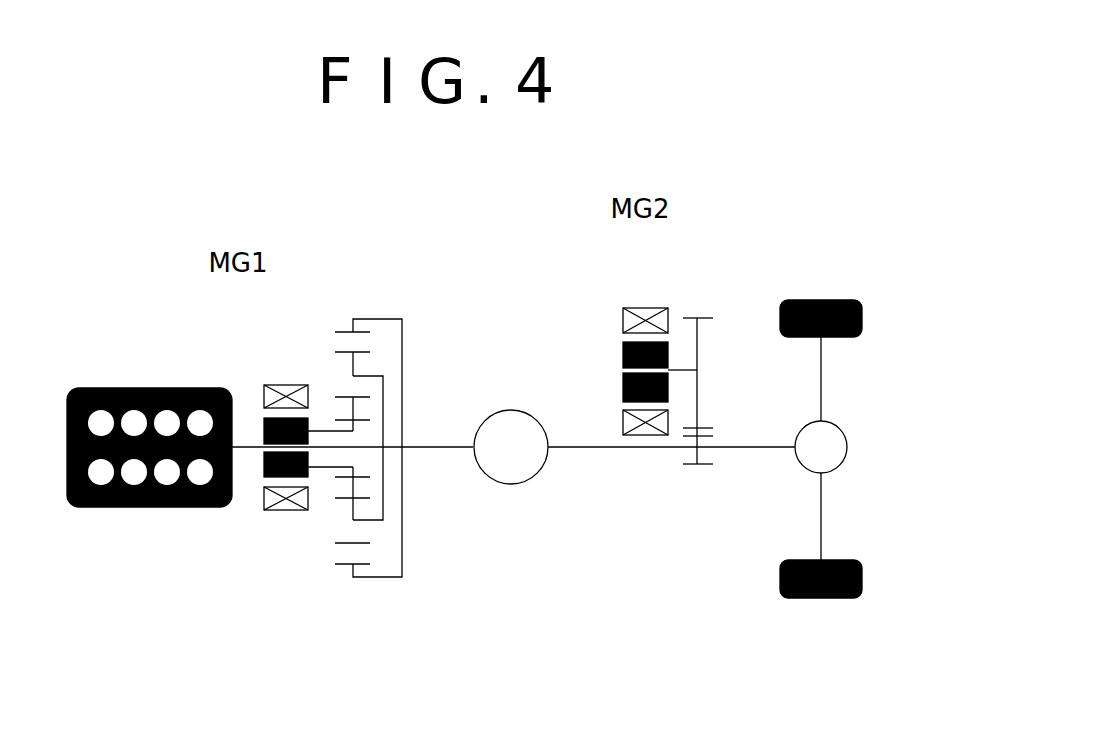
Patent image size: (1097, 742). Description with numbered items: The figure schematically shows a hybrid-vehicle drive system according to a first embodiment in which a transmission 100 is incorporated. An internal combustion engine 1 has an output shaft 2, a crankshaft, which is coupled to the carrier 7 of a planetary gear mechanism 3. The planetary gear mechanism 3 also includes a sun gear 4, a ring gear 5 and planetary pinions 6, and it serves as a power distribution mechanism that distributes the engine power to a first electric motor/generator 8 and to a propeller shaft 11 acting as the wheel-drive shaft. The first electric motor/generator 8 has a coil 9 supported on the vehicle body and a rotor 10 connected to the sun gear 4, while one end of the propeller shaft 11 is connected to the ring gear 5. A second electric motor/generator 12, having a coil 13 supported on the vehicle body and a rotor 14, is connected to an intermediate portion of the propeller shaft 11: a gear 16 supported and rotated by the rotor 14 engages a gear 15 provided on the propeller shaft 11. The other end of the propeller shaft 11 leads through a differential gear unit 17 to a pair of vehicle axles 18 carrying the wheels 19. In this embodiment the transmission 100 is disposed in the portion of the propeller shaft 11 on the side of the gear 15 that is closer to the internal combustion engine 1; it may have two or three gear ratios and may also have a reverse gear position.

The internal combustion engine 1 is at (120, 388).
The output shaft 2 is at (252, 443).
The planetary gear mechanism 3 is at (382, 312).
The sun gear 4 is at (363, 416).
The ring gear 5 is at (352, 331).
The planetary pinions 6 is at (356, 368).
The carrier 7 is at (385, 493).
The first electric motor/generator 8 is at (298, 368).
The coil 9 is at (283, 512).
The rotor 10 is at (263, 463).
The propeller shaft 11 is at (568, 452).
The second electric motor/generator 12 is at (645, 306).
The coil 13 is at (624, 322).
The rotor 14 is at (624, 356).
The gear 15 is at (692, 464).
The gear 16 is at (704, 424).
The differential gear unit 17 is at (797, 460).
The vehicle axles 18 is at (821, 388).
The wheels 19 is at (820, 300).
The transmission 100 is at (515, 484).